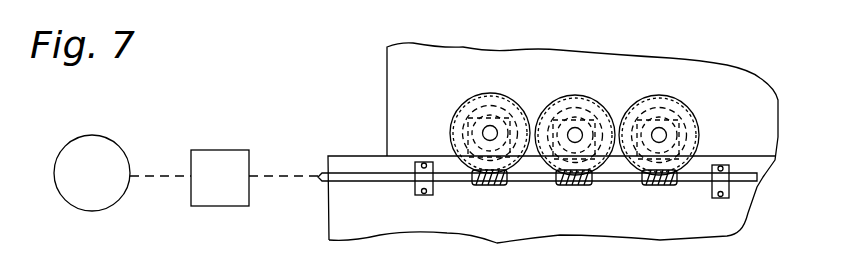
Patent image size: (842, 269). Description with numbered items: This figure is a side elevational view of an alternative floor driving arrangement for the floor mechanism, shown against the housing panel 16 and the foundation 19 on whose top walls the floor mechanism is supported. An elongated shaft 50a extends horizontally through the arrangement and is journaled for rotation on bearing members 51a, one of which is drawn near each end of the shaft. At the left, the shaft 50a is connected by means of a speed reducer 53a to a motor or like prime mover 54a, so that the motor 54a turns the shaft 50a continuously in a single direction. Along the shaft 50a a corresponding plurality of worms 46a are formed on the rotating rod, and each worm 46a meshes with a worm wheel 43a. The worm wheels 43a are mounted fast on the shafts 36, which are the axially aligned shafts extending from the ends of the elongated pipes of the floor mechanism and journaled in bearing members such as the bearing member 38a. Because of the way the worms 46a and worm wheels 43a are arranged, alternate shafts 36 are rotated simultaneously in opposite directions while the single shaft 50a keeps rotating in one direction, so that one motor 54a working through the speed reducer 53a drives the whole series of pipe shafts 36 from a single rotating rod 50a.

The housing panel 16 is at (384, 78).
The foundation 19 is at (327, 200).
The shaft 36 is at (494, 130).
The disc 38a is at (453, 121).
The worm wheel 43a is at (471, 98).
The worm 46a is at (485, 185).
The shaft 50a is at (372, 178).
The bearing member 51a is at (413, 194).
The speed reducer 53a is at (220, 162).
The motor 54a is at (90, 147).